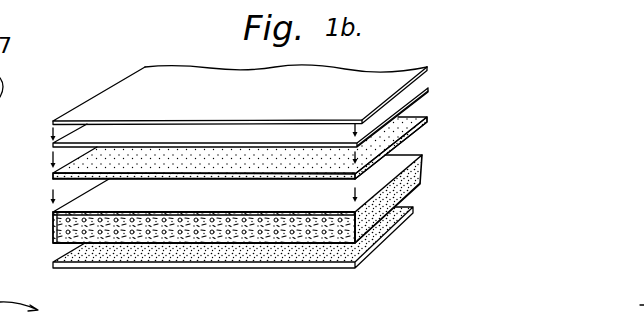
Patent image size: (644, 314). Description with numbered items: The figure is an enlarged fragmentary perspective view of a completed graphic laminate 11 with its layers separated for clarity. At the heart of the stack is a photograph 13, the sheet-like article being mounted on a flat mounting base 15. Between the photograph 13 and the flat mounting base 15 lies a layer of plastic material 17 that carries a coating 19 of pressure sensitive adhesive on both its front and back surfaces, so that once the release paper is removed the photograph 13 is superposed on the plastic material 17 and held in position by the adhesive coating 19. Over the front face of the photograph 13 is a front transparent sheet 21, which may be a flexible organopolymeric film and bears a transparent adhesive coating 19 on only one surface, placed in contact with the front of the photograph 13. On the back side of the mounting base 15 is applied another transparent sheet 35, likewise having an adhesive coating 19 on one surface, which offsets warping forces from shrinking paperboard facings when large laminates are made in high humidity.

The graphic laminate 11 is at (439, 77).
The photograph 13 is at (53, 143).
The flat mounting base 15 is at (238, 237).
The layer of plastic material 17 is at (53, 176).
The pressure sensitive adhesive coating 19 is at (407, 97).
The front transparent sheet 21 is at (217, 67).
The back transparent sheet 35 is at (311, 268).